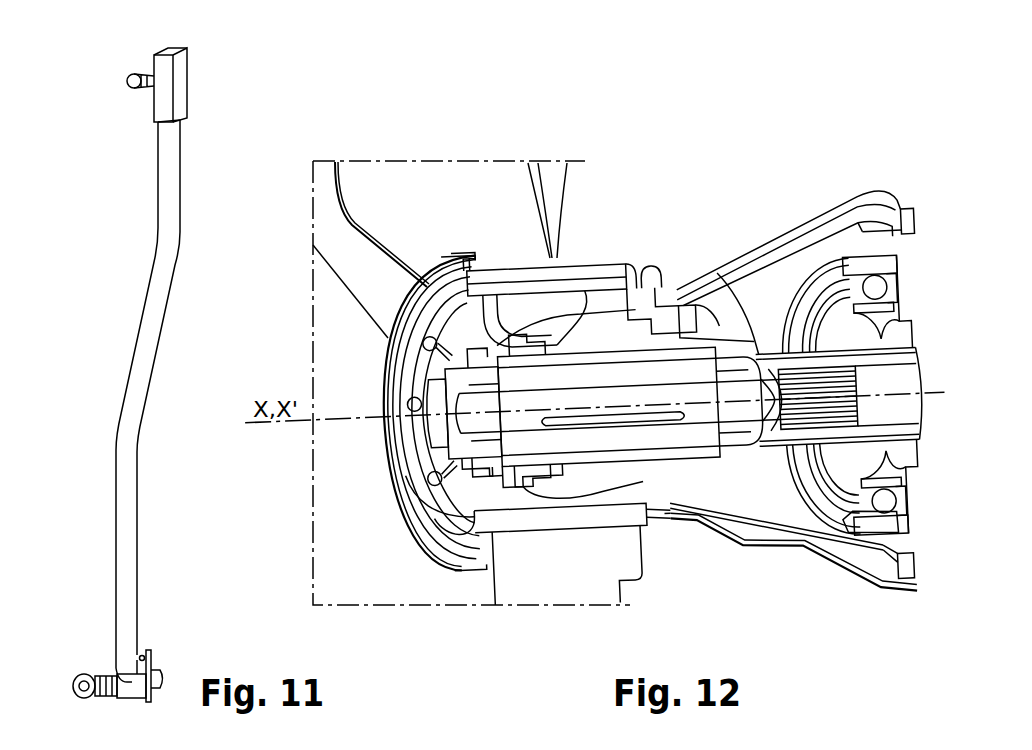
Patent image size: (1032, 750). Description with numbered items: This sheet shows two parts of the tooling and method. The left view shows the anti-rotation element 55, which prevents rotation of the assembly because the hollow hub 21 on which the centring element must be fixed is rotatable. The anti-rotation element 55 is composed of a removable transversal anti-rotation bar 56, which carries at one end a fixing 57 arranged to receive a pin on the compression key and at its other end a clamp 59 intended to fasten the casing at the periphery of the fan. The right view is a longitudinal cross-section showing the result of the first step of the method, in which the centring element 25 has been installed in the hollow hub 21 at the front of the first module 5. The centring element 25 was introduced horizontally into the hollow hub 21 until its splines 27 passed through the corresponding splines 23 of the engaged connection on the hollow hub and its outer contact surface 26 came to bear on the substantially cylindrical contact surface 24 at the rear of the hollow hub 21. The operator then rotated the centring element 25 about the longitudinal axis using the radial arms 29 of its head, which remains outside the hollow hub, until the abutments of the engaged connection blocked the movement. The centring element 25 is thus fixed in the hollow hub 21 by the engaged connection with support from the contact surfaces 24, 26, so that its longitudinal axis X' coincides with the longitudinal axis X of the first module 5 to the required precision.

In FIG. 12, the first module 5 is at (411, 150).
In FIG. 12, the hollow hub 21 is at (590, 350).
In FIG. 12, the splines 23 is at (515, 452).
In FIG. 12, the contact surface 24 is at (748, 348).
In FIG. 12, the centring element 25 is at (578, 400).
In FIG. 12, the contact surface 26 is at (762, 437).
In FIG. 12, the splines 27 is at (547, 452).
In FIG. 12, the radial arms 29 is at (382, 325).
In FIG. 11, the anti-rotation element 55 is at (94, 371).
In FIG. 11, the anti-rotation bar 56 is at (141, 312).
In FIG. 11, the fixing 57 is at (148, 108).
In FIG. 11, the clamp 59 is at (93, 678).